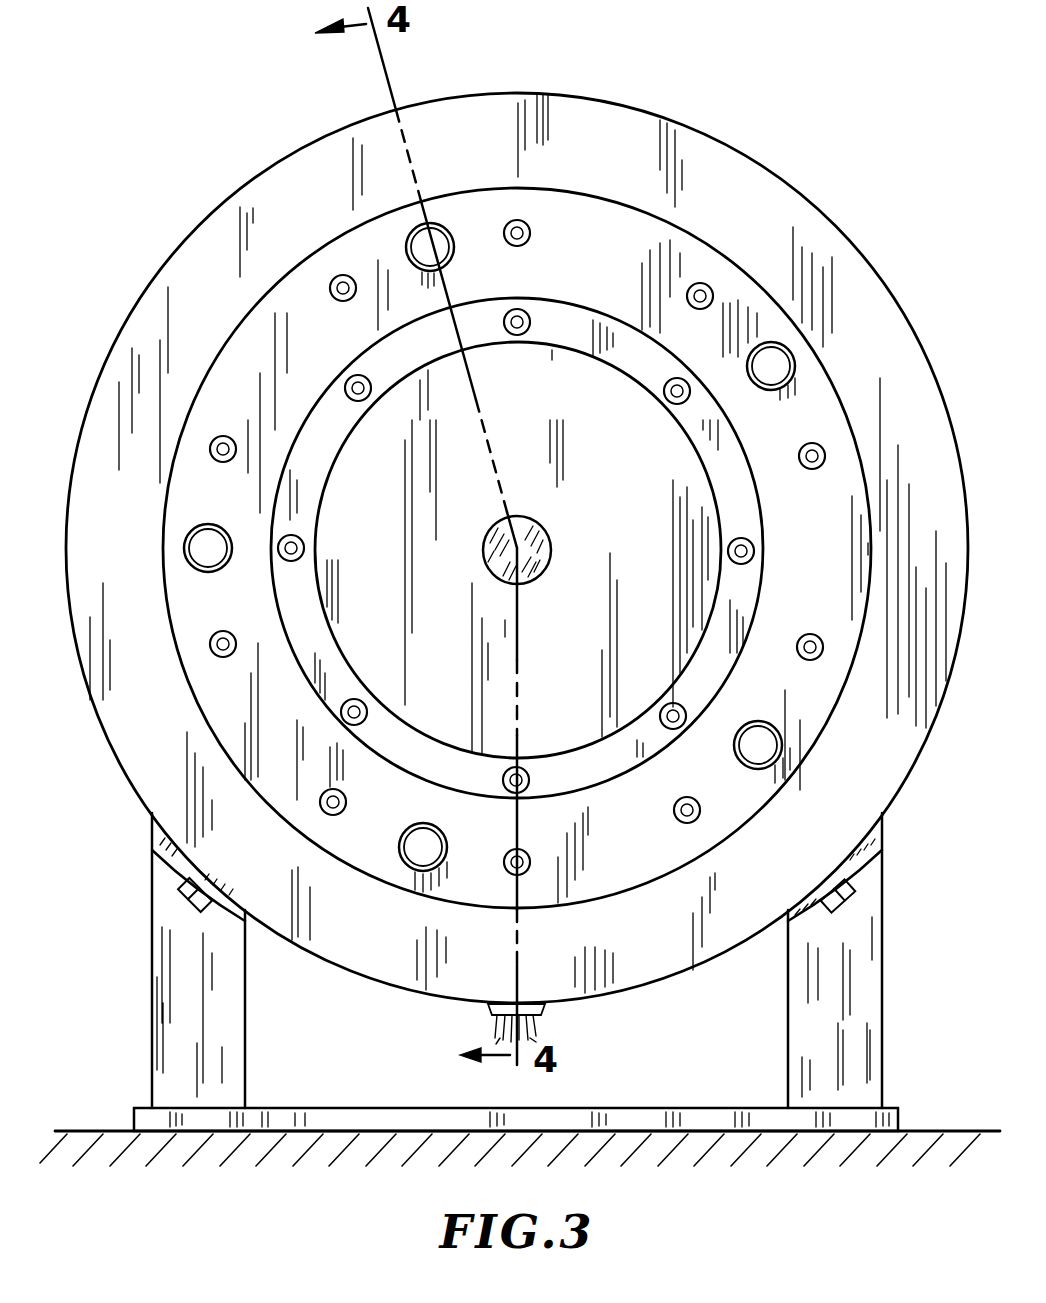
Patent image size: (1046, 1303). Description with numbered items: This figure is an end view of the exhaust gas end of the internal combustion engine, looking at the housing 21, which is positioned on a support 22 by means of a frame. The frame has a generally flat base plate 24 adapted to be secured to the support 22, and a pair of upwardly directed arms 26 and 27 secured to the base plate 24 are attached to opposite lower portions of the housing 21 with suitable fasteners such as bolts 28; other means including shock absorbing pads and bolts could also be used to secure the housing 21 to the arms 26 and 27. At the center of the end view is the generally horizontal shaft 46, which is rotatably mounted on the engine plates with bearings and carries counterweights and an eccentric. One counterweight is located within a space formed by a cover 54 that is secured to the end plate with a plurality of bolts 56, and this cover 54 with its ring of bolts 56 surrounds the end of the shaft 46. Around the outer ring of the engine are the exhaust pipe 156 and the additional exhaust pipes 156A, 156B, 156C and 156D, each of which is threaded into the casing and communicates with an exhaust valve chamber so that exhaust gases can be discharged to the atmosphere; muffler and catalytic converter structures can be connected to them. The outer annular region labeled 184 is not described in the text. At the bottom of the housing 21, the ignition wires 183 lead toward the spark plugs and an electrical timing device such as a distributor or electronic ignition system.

The outer mounting ring 184 is at (748, 170).
The housing 21 is at (630, 277).
The cover 54 is at (744, 602).
The bolts 56 is at (753, 548).
The shaft 46 is at (538, 553).
The exhaust pipe 156 is at (437, 236).
The exhaust pipe 156A is at (771, 372).
The exhaust pipe 156B is at (758, 746).
The exhaust pipe 156C is at (417, 848).
The exhaust pipe 156D is at (208, 562).
The arm 26 is at (232, 1004).
The arm 27 is at (872, 986).
The bolts 28 is at (186, 903).
The base plate 24 is at (660, 1118).
The support 22 is at (920, 1148).
The ignition wires 183 is at (498, 1020).